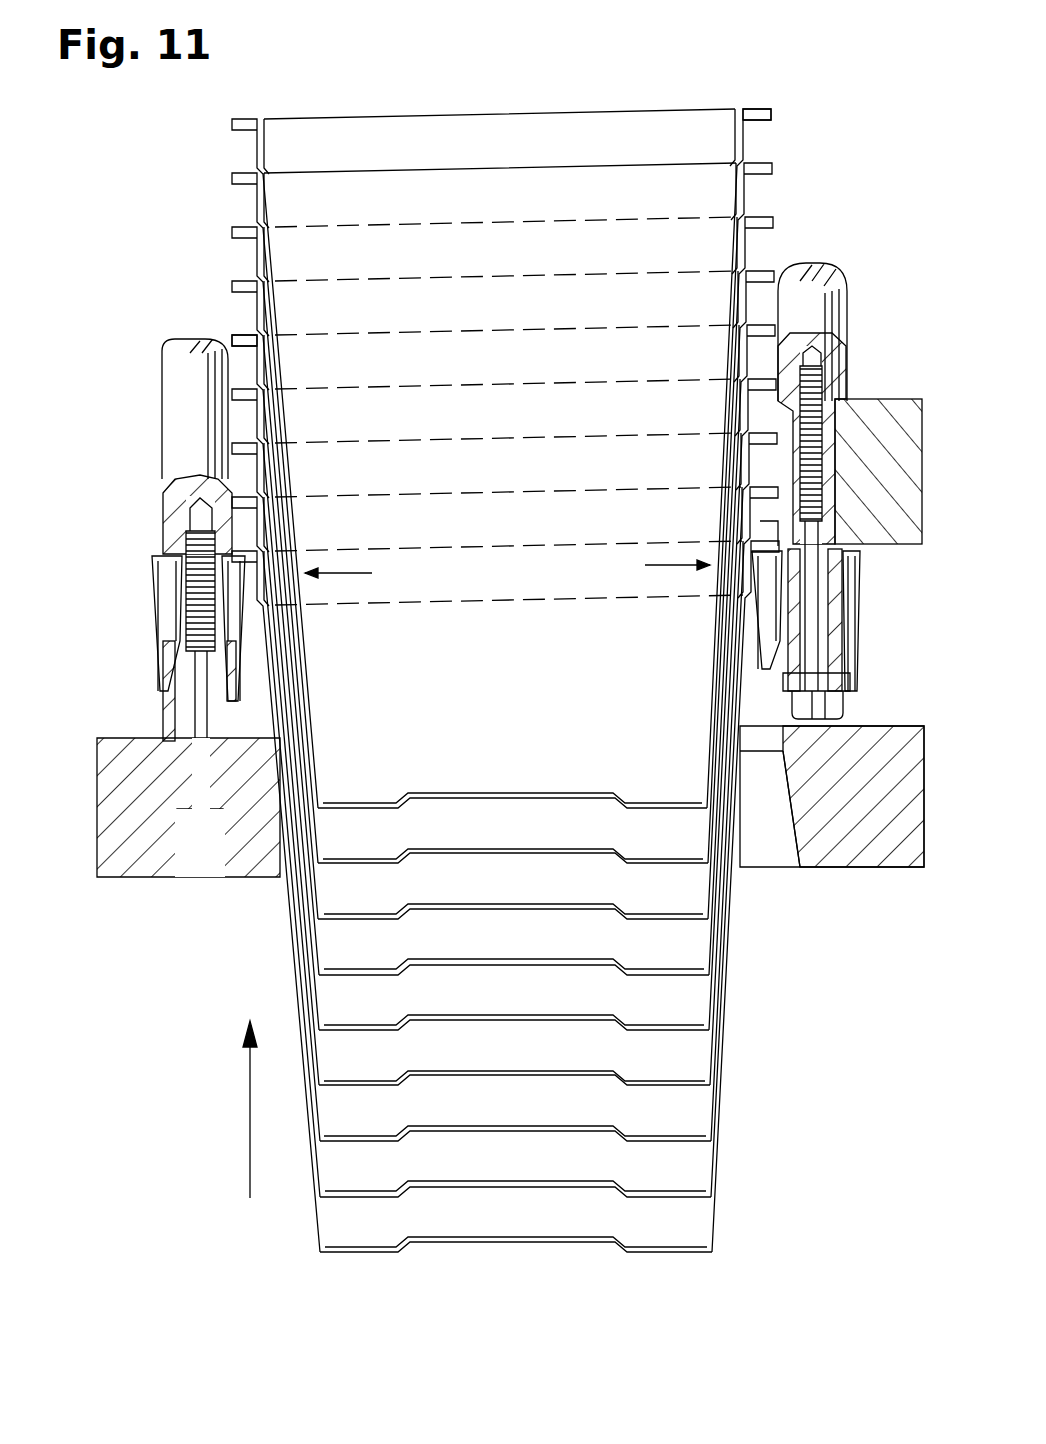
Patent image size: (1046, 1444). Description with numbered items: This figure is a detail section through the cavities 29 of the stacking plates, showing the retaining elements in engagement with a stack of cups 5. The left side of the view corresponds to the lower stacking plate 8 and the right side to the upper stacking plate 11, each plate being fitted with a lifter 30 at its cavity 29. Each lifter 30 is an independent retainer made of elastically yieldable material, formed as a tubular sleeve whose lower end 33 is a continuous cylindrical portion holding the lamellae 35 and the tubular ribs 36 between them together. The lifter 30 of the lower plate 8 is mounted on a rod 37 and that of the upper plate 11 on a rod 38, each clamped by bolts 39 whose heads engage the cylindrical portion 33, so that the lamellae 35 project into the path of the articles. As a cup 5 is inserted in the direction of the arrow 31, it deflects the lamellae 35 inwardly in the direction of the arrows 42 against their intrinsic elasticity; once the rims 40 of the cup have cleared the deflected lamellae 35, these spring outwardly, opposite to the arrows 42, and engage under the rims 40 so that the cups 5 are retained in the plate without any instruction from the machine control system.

The cup 5 is at (256, 152).
The lower stacking plate 8 is at (893, 815).
The upper stacking plate 11 is at (885, 455).
The cavity 29 is at (770, 525).
The lifter 30 is at (148, 686).
The arrow 31 is at (250, 1110).
The lower end 33 is at (232, 680).
The lamella 35 is at (175, 605).
The tubular rib 36 is at (175, 630).
The rod 37 is at (175, 412).
The rod 38 is at (840, 310).
The bolt 39 is at (205, 768).
The rim 40 is at (757, 104).
The arrow 42 is at (345, 572).